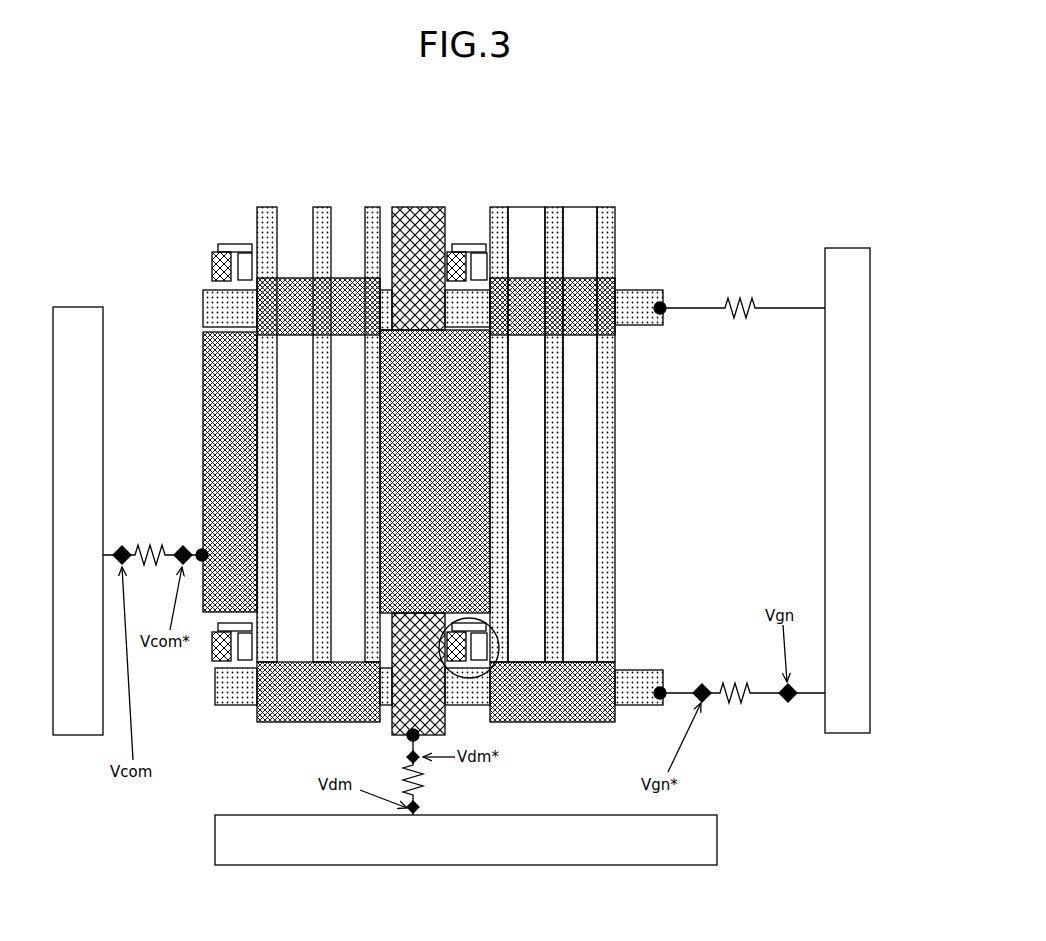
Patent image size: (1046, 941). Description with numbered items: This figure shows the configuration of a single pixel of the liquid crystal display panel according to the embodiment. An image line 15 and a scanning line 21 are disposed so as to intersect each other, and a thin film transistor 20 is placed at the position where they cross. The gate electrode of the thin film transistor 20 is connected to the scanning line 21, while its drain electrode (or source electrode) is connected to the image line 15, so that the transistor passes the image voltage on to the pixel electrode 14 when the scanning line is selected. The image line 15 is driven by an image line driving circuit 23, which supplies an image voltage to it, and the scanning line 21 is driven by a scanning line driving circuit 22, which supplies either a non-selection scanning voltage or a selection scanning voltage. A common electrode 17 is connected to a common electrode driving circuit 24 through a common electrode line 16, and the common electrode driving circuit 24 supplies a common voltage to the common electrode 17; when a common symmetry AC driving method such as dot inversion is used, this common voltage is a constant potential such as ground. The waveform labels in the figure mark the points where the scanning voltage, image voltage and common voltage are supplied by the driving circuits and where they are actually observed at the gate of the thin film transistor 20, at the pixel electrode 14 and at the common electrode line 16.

The pixel electrode 14 is at (535, 626).
The image line 15 is at (424, 238).
The common electrode line 16 is at (415, 366).
The common electrode 17 is at (496, 382).
The thin film transistor 20 is at (482, 681).
The scanning line 21 is at (648, 295).
The scanning line driving circuit 22 is at (836, 267).
The image line driving circuit 23 is at (710, 826).
The common electrode driving circuit 24 is at (86, 320).